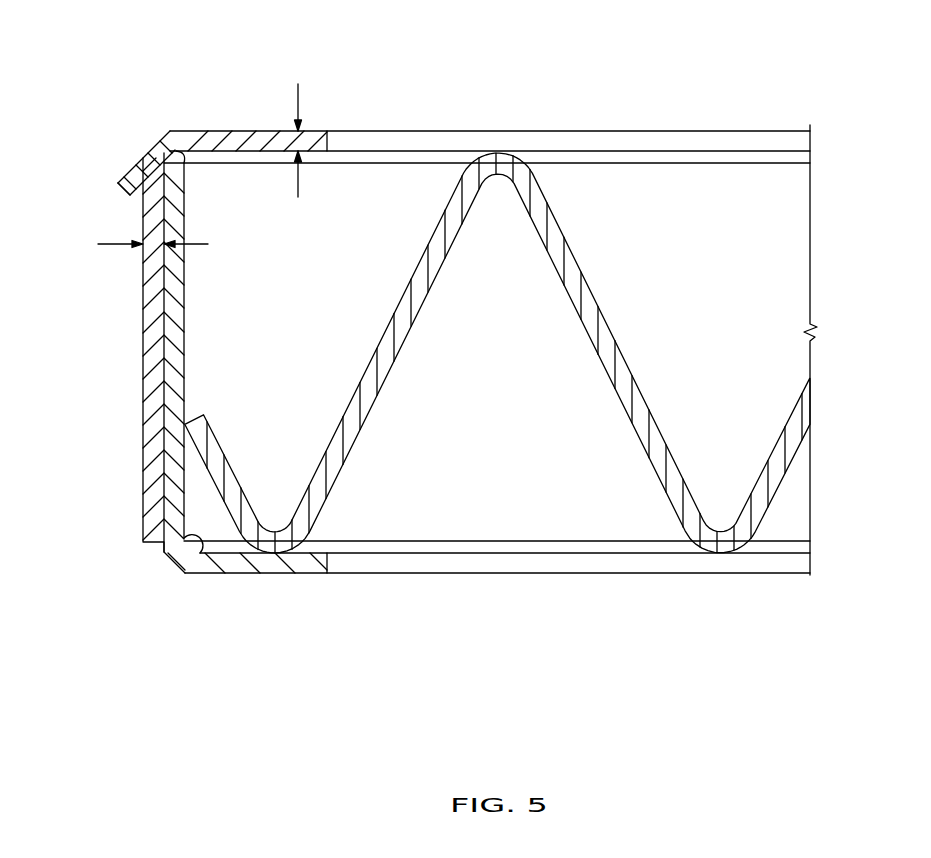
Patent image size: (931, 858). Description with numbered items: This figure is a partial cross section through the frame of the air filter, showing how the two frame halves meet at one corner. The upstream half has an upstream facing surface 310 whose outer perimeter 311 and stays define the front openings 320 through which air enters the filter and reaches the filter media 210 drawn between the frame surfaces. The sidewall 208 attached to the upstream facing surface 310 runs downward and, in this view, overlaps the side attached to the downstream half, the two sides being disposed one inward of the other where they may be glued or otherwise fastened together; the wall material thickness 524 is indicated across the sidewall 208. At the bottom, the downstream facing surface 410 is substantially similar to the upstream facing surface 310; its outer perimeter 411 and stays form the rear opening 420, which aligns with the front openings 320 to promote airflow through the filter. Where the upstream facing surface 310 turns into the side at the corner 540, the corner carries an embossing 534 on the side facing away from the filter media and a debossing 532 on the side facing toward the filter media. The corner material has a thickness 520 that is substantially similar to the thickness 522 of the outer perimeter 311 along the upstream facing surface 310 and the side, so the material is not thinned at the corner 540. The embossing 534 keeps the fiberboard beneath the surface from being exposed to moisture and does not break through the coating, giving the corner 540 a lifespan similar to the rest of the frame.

The sidewall 208 is at (143, 336).
The corrugated core 210 is at (597, 292).
The upstream facing surface 310 is at (233, 130).
The outer perimeter 311 is at (203, 142).
The front openings 320 is at (425, 141).
The downstream facing surface 410 is at (290, 563).
The outer perimeter 411 is at (204, 563).
The rear opening 420 is at (595, 565).
The thickness 520 is at (130, 191).
The thickness 522 is at (297, 128).
The wall thickness 524 is at (135, 245).
The debossing 532 is at (157, 138).
The embossing 534 is at (179, 156).
The angled flange 540 is at (152, 131).